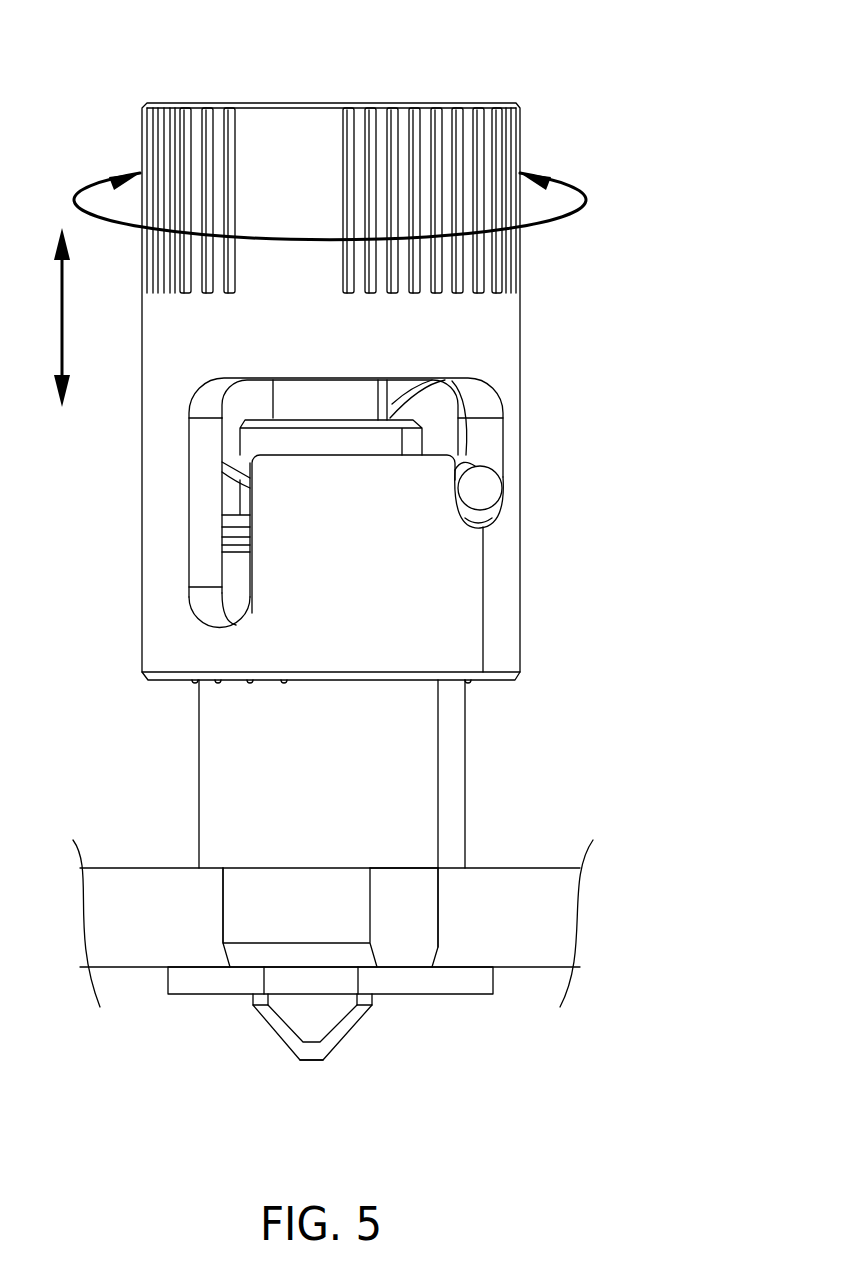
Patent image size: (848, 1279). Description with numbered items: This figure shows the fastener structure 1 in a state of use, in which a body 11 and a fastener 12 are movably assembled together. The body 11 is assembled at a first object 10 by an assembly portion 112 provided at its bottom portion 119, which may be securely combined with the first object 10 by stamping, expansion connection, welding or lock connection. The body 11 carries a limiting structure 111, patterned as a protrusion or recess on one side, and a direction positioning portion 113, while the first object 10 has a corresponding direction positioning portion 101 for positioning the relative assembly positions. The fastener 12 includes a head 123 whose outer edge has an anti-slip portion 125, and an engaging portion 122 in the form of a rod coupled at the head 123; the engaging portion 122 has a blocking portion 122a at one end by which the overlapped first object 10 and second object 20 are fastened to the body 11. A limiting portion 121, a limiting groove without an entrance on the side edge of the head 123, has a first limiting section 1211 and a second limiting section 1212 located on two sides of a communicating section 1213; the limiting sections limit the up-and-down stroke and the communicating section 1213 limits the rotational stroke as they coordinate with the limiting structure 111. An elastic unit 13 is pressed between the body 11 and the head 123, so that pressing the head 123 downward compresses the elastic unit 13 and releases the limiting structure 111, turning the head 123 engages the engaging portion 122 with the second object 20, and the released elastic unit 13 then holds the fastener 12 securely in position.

The fastener structure 1 is at (88, 72).
The first object 10 is at (546, 884).
The corresponding direction positioning portion 101 is at (440, 928).
The body 11 is at (222, 767).
The limiting structure 111 is at (472, 492).
The assembly portion 112 is at (258, 908).
The direction positioning portion 113 is at (408, 928).
The bottom portion 119 is at (407, 869).
The fastener 12 is at (470, 92).
The limiting portion 121 is at (505, 438).
The first limiting section 1211 is at (213, 622).
The second limiting section 1212 is at (483, 527).
The communicating section 1213 is at (342, 395).
The engaging portion 122 is at (253, 1003).
The blocking portion 122a is at (317, 1052).
The head 123 is at (277, 103).
The anti-slip portion 125 is at (383, 155).
The elastic unit 13 is at (232, 450).
The second object 20 is at (182, 982).